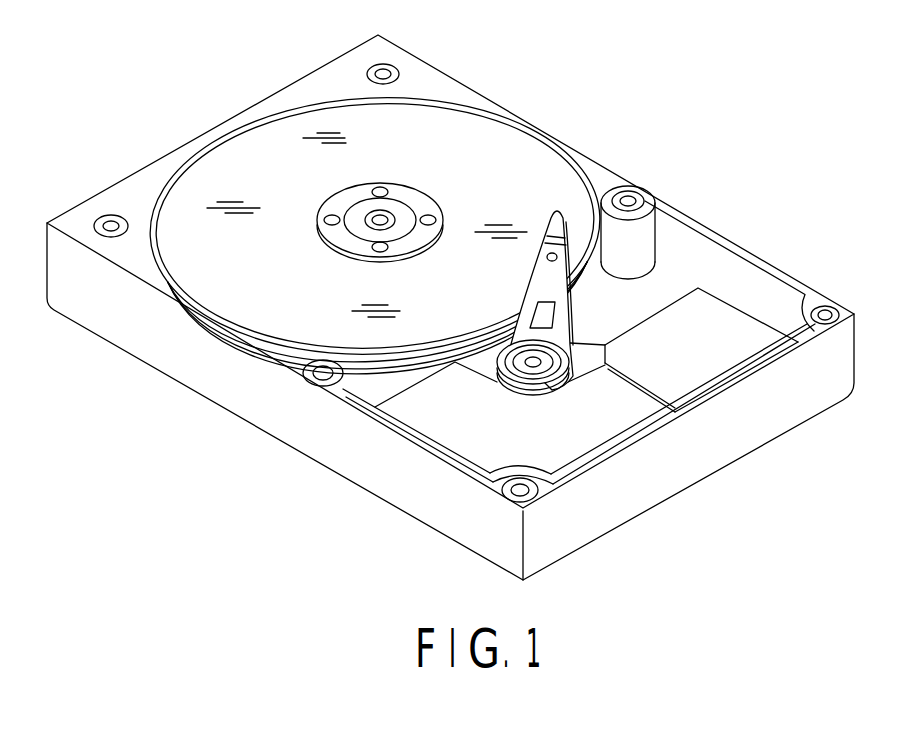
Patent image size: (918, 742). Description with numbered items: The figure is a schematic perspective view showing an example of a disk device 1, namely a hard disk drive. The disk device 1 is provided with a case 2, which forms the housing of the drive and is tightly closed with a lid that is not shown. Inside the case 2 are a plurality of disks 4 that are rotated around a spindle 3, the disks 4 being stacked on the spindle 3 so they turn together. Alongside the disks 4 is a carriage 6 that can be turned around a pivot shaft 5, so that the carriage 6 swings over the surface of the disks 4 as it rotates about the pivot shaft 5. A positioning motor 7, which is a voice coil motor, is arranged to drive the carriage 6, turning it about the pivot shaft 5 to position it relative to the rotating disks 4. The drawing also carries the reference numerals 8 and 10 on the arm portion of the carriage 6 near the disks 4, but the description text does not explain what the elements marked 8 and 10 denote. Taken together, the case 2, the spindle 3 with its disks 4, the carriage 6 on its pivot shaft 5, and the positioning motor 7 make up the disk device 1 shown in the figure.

The disk device 1 is at (450, 307).
The case 2 is at (247, 405).
The spindle 3 is at (396, 207).
The disks 4 is at (493, 148).
The pivot shaft 5 is at (556, 380).
The carriage 6 is at (580, 334).
The positioning motor (voice coil motor) 7 is at (458, 443).
The actuator arm 8 is at (565, 252).
The magnetic head 10 is at (556, 228).